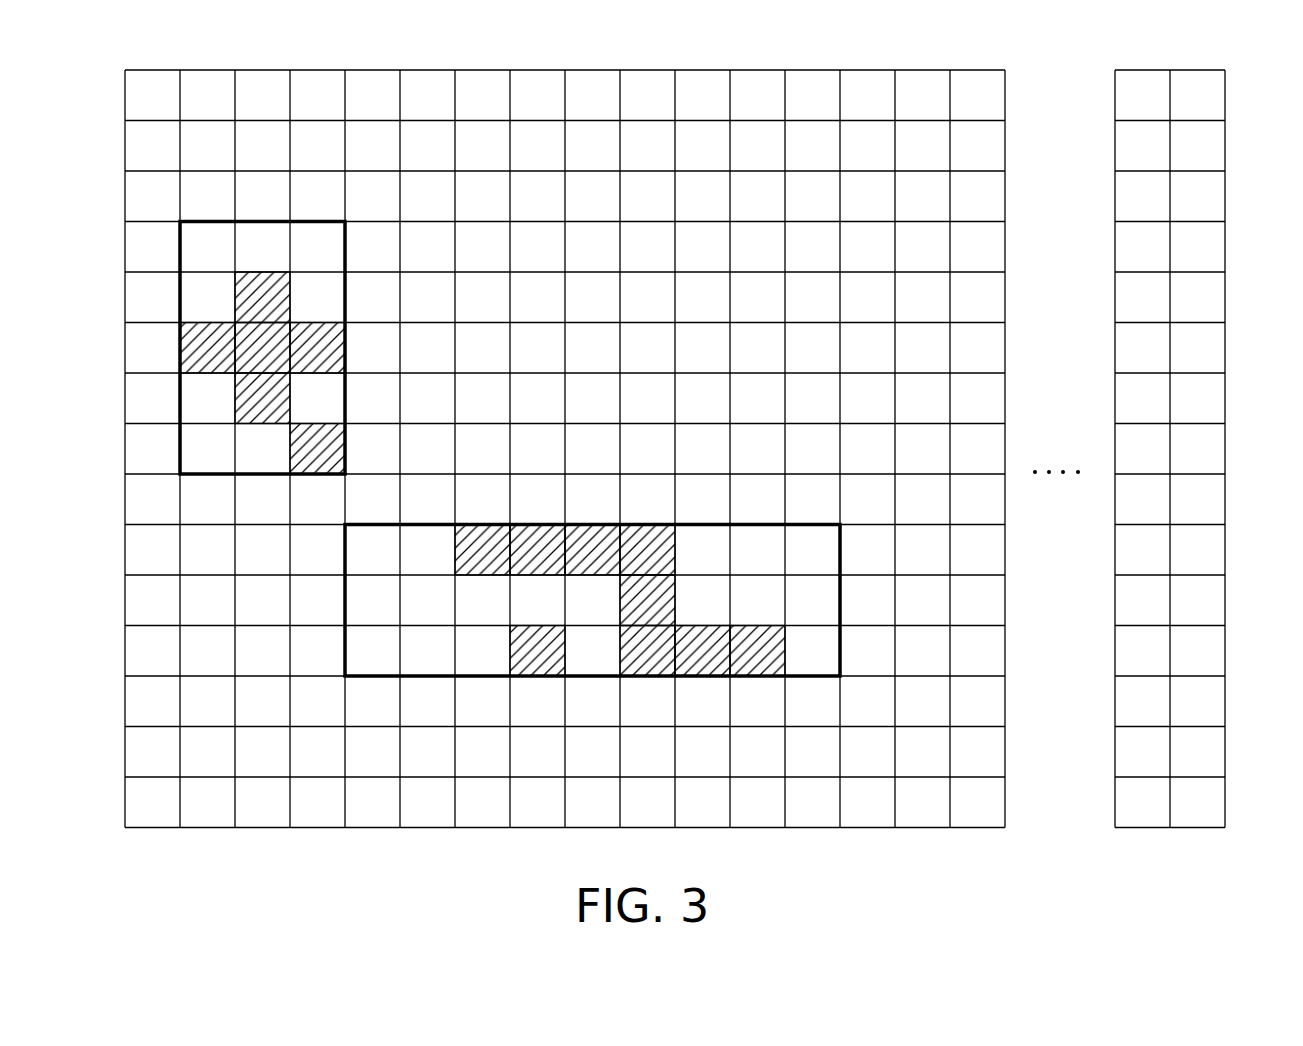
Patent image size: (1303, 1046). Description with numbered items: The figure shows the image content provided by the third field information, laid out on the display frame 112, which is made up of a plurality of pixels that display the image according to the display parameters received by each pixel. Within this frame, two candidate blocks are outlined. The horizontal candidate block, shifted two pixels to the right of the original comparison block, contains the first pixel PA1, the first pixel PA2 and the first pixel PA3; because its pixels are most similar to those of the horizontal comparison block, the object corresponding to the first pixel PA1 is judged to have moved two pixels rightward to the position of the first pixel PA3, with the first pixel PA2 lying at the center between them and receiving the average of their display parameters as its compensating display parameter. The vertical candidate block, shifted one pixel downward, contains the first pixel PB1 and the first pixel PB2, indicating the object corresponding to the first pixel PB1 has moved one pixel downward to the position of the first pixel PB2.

The display frame 112 is at (1176, 40).
The first pixel PB1 is at (262, 297).
The first pixel PB2 is at (290, 348).
The first pixel PA1 is at (482, 571).
The first pixel PA2 is at (537, 601).
The first pixel PA3 is at (592, 571).